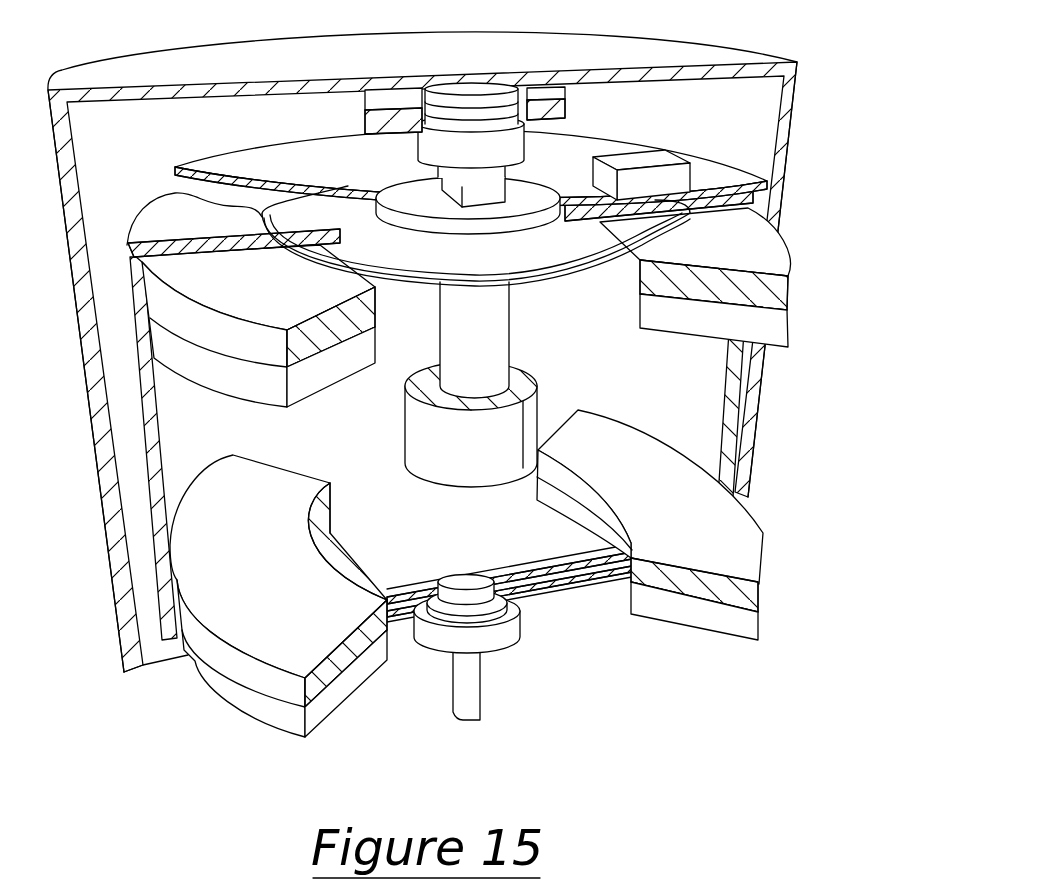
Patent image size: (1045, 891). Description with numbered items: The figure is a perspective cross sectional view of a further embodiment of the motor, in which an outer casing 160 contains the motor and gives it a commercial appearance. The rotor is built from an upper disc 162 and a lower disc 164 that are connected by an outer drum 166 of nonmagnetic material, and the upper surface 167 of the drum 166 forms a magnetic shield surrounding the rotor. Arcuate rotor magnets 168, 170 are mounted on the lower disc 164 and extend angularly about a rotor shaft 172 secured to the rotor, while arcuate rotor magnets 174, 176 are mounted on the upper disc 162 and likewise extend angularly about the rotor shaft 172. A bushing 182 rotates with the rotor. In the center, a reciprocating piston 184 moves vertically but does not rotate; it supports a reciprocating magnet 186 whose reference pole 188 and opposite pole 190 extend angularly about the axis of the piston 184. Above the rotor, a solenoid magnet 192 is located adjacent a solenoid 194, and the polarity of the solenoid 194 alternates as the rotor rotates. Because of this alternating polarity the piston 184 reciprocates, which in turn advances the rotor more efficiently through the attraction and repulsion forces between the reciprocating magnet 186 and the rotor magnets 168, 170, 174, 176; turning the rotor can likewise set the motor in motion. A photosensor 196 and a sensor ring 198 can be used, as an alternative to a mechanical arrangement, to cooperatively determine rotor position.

The outer casing 160 is at (790, 122).
The upper disc 162 is at (155, 218).
The lower disc 164 is at (562, 590).
The outer drum 166 is at (150, 470).
The upper surface 167 is at (753, 200).
The arcuate rotor magnet 168 is at (700, 556).
The arcuate rotor magnet 170 is at (261, 611).
The rotor shaft 172 is at (462, 720).
The arcuate rotor magnet 174 is at (740, 299).
The arcuate rotor magnet 176 is at (268, 346).
The bushing 182 is at (570, 248).
The reciprocating piston 184 is at (450, 336).
The reciprocating magnet 186 is at (475, 388).
The reference pole 188 is at (423, 379).
The opposite pole 190 is at (523, 382).
The solenoid magnet 192 is at (366, 100).
The solenoid 194 is at (520, 145).
The photosensor 196 is at (672, 152).
The sensor ring 198 is at (187, 197).